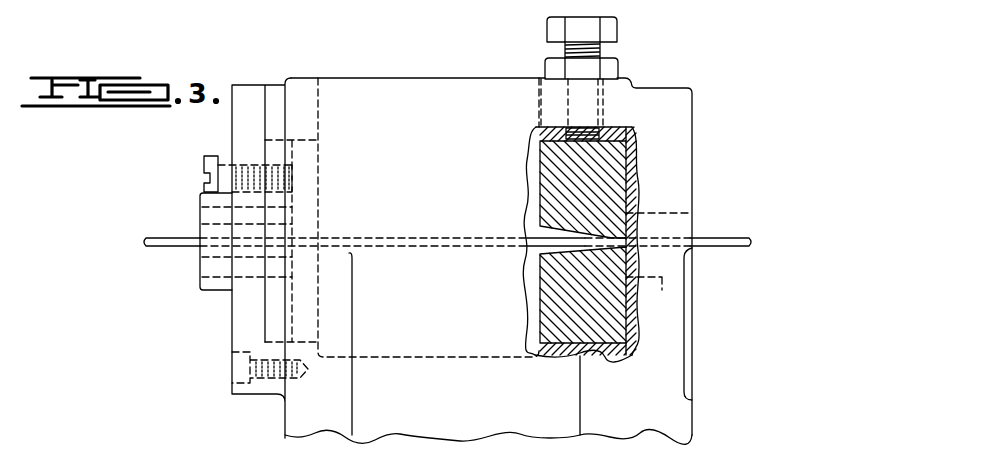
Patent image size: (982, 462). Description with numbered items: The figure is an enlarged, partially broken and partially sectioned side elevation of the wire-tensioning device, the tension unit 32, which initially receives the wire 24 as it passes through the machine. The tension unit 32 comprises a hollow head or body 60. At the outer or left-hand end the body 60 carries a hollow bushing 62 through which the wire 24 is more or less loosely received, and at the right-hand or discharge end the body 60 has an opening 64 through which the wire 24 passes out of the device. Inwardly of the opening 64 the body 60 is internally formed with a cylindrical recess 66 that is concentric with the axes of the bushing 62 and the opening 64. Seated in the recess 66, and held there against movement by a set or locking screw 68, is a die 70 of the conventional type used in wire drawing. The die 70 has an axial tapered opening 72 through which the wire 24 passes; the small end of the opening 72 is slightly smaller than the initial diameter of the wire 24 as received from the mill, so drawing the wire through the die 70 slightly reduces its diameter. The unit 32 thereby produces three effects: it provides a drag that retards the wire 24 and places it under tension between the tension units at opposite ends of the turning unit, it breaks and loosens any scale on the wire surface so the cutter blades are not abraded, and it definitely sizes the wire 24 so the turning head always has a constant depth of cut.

The wire 24 is at (157, 237).
The tension unit 32 is at (400, 79).
The hollow head or body 60 is at (413, 182).
The hollow bushing 62 is at (207, 281).
The opening 64 is at (662, 290).
The cylindrical recess 66 is at (619, 164).
The set or locking screw 68 is at (614, 29).
The die 70 is at (547, 184).
The axial tapered opening 72 is at (526, 252).